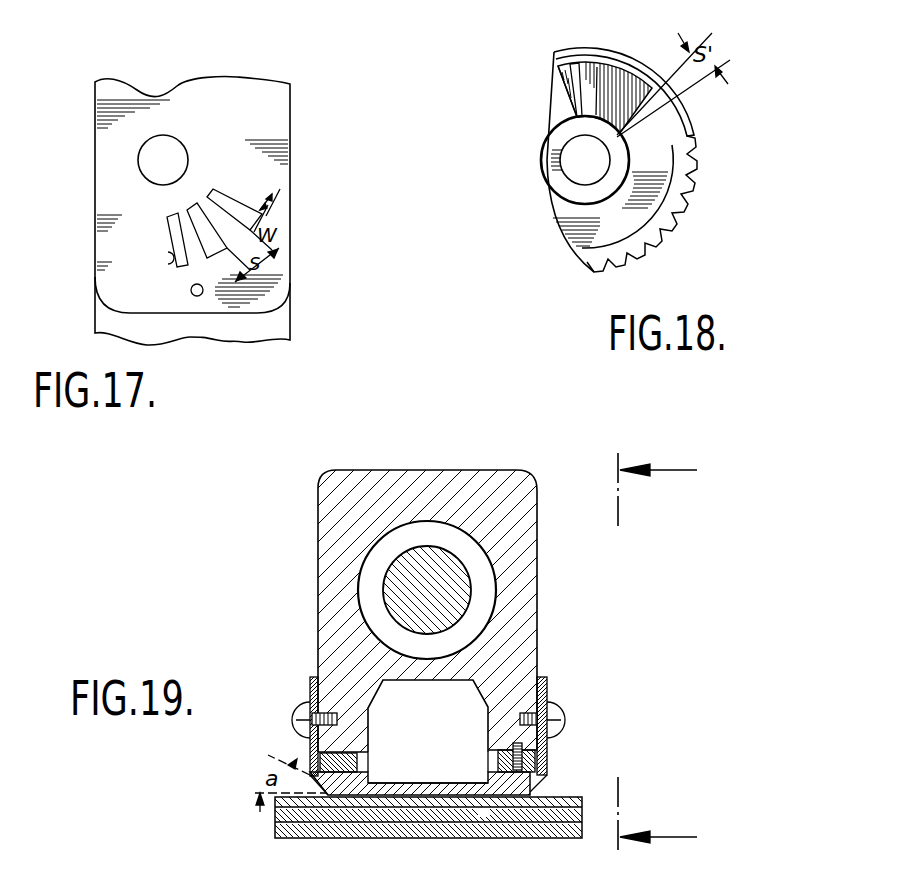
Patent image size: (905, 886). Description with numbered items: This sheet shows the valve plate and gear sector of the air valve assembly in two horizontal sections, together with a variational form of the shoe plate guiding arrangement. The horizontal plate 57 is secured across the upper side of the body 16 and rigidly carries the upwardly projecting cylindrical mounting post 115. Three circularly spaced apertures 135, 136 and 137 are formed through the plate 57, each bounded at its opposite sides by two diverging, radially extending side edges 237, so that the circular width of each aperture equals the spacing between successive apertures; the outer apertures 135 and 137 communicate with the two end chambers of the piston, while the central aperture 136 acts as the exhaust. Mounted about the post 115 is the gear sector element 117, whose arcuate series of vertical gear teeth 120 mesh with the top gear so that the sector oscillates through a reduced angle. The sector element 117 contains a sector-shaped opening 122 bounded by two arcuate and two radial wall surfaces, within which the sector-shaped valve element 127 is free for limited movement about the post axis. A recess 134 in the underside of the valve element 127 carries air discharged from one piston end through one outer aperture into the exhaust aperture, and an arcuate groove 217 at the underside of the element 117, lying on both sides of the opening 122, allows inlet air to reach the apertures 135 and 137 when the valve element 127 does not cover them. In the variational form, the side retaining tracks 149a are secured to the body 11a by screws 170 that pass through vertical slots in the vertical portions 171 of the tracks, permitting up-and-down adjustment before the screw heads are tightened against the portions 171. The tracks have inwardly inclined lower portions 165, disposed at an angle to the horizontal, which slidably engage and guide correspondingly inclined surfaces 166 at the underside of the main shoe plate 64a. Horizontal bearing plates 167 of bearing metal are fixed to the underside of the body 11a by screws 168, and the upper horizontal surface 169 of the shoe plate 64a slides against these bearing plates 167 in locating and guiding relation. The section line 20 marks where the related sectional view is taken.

In FIG. 17, the horizontal plate 57 is at (272, 117).
In FIG. 17, the body 16 is at (273, 328).
In FIG. 17, the mounting post 115 is at (148, 163).
In FIG. 17, the aperture 135 is at (173, 237).
In FIG. 17, the aperture 136 is at (200, 218).
In FIG. 17, the aperture 137 is at (223, 200).
In FIG. 17, the side edges 237 is at (168, 267).
In FIG. 18, the gear sector element 117 is at (667, 208).
In FIG. 18, the gear teeth 120 is at (660, 237).
In FIG. 18, the opening 122 is at (570, 67).
In FIG. 18, the valve element 127 is at (585, 94).
In FIG. 18, the recess 134 is at (610, 87).
In FIG. 18, the arcuate groove 217 is at (660, 132).
In FIG. 19, the body 11a is at (525, 632).
In FIG. 19, the side retaining tracks 149a is at (547, 682).
In FIG. 19, the inwardly inclined lower portions 165 is at (550, 787).
In FIG. 19, the inclined surfaces 166 is at (327, 778).
In FIG. 19, the bearing plates 167 is at (357, 762).
In FIG. 19, the screws 168 is at (512, 745).
In FIG. 19, the upper horizontal surface 169 is at (368, 773).
In FIG. 19, the screws 170 is at (553, 717).
In FIG. 19, the vertical portions 171 is at (308, 692).
In FIG. 19, the main shoe plate 64a is at (420, 788).
In FIG. 19, the section line 20- 20 is at (680, 654).